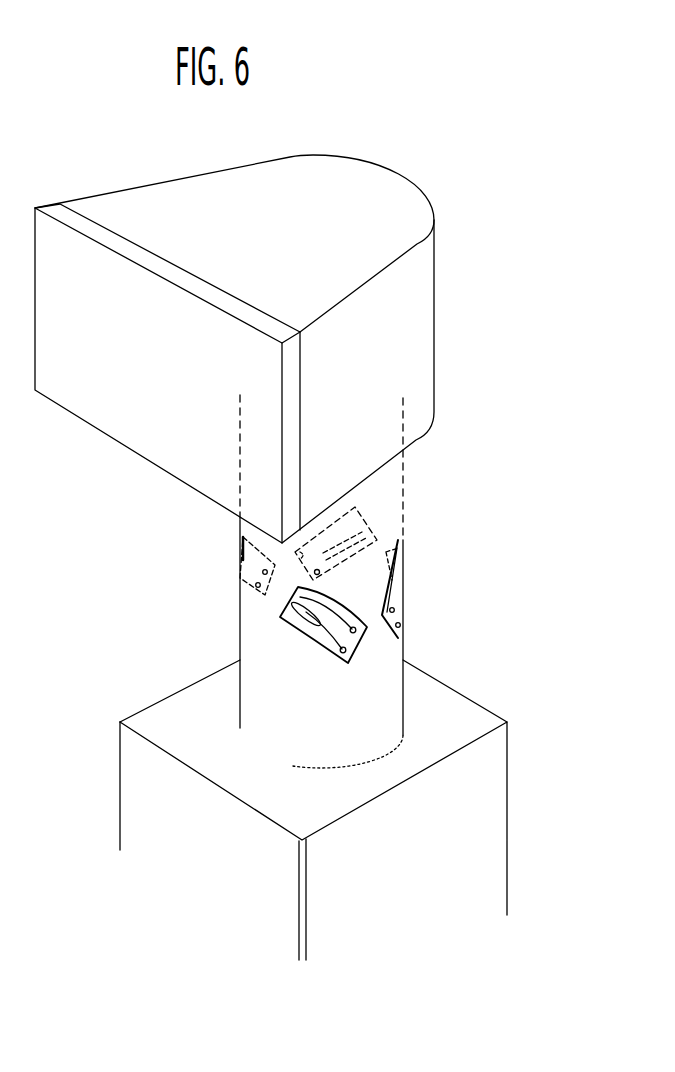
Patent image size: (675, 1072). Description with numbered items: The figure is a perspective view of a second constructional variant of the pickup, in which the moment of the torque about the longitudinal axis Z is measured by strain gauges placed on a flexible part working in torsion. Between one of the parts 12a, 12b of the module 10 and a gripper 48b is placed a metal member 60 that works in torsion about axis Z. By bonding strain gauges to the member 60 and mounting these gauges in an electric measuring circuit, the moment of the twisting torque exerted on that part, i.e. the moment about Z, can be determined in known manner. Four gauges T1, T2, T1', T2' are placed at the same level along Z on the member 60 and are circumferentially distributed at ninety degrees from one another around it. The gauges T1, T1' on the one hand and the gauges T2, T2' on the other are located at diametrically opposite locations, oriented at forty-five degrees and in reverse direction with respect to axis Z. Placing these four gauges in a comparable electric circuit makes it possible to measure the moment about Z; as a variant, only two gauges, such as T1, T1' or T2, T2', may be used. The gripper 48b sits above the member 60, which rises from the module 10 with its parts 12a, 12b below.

The gripper 48b is at (418, 318).
The metal member 60 is at (393, 478).
The gauge T1 is at (317, 636).
The gauge T1' is at (377, 535).
The gauge T2 is at (418, 589).
The gauge T2' is at (223, 564).
The part of module 12a is at (150, 707).
The part of module 12b is at (306, 686).
The module 10 is at (510, 793).